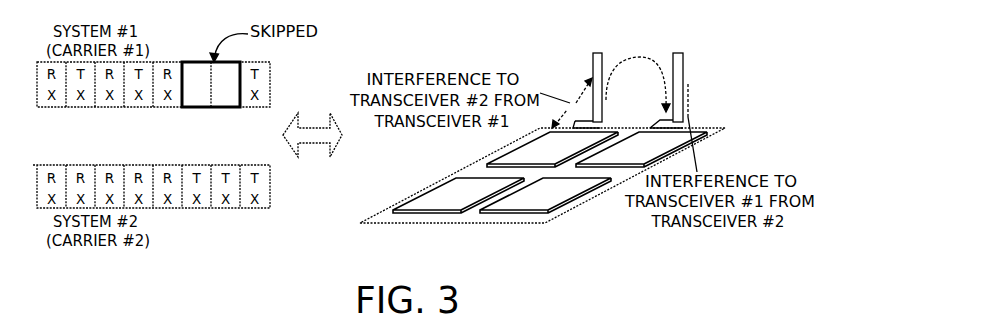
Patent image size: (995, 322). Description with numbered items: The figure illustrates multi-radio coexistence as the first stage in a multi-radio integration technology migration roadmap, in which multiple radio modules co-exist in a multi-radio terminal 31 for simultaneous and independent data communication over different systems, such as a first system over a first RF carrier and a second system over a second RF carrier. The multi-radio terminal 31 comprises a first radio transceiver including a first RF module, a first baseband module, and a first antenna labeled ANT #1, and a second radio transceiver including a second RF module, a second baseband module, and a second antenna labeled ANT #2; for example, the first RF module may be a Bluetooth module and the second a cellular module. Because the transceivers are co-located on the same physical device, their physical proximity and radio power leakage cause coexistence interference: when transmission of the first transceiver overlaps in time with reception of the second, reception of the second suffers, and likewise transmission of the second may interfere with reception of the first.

The multi-radio terminal 31 is at (554, 154).
The antenna #1 (ANT #1) 1 is at (567, 88).
The antenna #2 (ANT #2) 2 is at (699, 88).